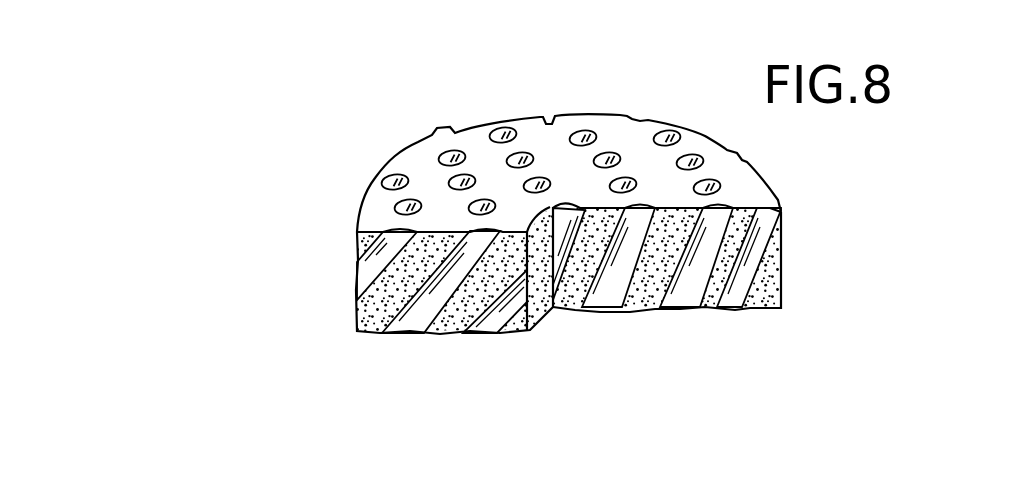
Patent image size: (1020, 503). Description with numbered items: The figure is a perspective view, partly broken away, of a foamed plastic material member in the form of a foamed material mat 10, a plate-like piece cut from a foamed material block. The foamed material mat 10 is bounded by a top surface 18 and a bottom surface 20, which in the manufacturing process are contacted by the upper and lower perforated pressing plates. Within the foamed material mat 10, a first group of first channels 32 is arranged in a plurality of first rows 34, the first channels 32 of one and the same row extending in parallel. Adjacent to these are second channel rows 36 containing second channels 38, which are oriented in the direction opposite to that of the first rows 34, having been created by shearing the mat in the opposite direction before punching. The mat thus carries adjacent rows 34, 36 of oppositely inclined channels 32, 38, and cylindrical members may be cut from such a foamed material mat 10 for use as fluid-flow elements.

The foamed material mat 10 is at (450, 98).
The top surface 18 is at (549, 138).
The bottom surface 20 is at (700, 310).
The first channels 32 is at (473, 331).
The first rows 34 is at (383, 178).
The second channel rows 36 is at (420, 153).
The second channels 38 is at (690, 308).